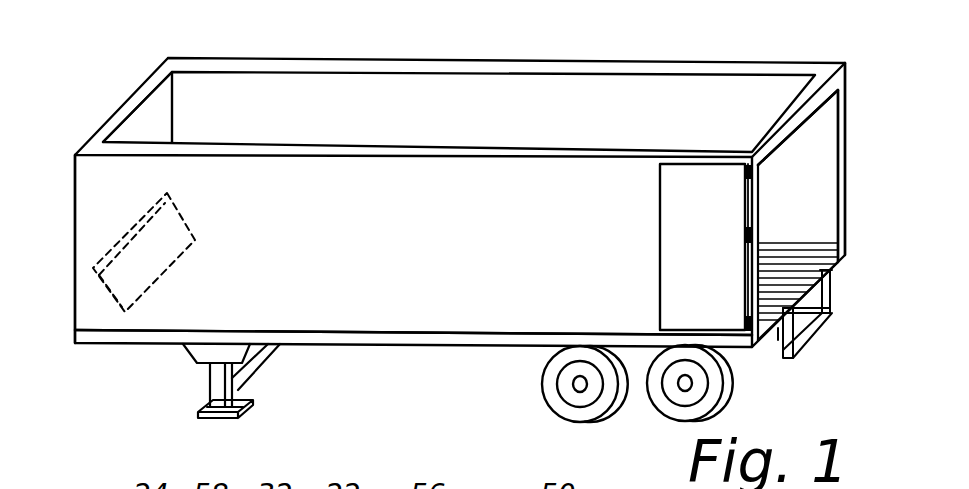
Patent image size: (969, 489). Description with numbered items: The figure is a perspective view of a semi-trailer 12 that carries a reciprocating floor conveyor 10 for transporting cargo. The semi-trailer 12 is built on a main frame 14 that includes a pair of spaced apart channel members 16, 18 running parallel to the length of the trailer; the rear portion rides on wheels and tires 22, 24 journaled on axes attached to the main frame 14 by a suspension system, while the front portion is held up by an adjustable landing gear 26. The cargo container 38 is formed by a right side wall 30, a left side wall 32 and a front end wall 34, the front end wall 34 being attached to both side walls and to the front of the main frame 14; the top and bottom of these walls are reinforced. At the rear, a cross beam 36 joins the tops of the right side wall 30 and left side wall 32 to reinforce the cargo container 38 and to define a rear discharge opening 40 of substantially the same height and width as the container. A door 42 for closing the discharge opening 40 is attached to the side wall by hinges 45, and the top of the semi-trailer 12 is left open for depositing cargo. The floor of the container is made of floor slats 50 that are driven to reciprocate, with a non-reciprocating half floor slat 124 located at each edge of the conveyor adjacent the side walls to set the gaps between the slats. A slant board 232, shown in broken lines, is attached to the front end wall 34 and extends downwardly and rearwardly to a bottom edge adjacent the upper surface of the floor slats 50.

The reciprocating floor conveyor 10 is at (797, 234).
The semi-trailer 12 is at (446, 61).
The main frame 14 is at (798, 355).
The channel member 16 is at (813, 293).
The channel member 18 is at (780, 335).
The wheels and tires 22 is at (548, 386).
The wheels and tires 24 is at (672, 407).
The adjustable landing gear 26 is at (238, 391).
The right side wall 30 is at (617, 97).
The left side wall 32 is at (399, 313).
The front end wall 34 is at (142, 122).
The cross beam 36 is at (805, 110).
The cargo container 38 is at (75, 215).
The rear discharge opening 40 is at (847, 168).
The door 42 is at (672, 210).
The hinges 45 is at (745, 170).
The floor slat 50 is at (790, 295).
The half floor slat 124 is at (806, 246).
The slant board 232 is at (125, 312).